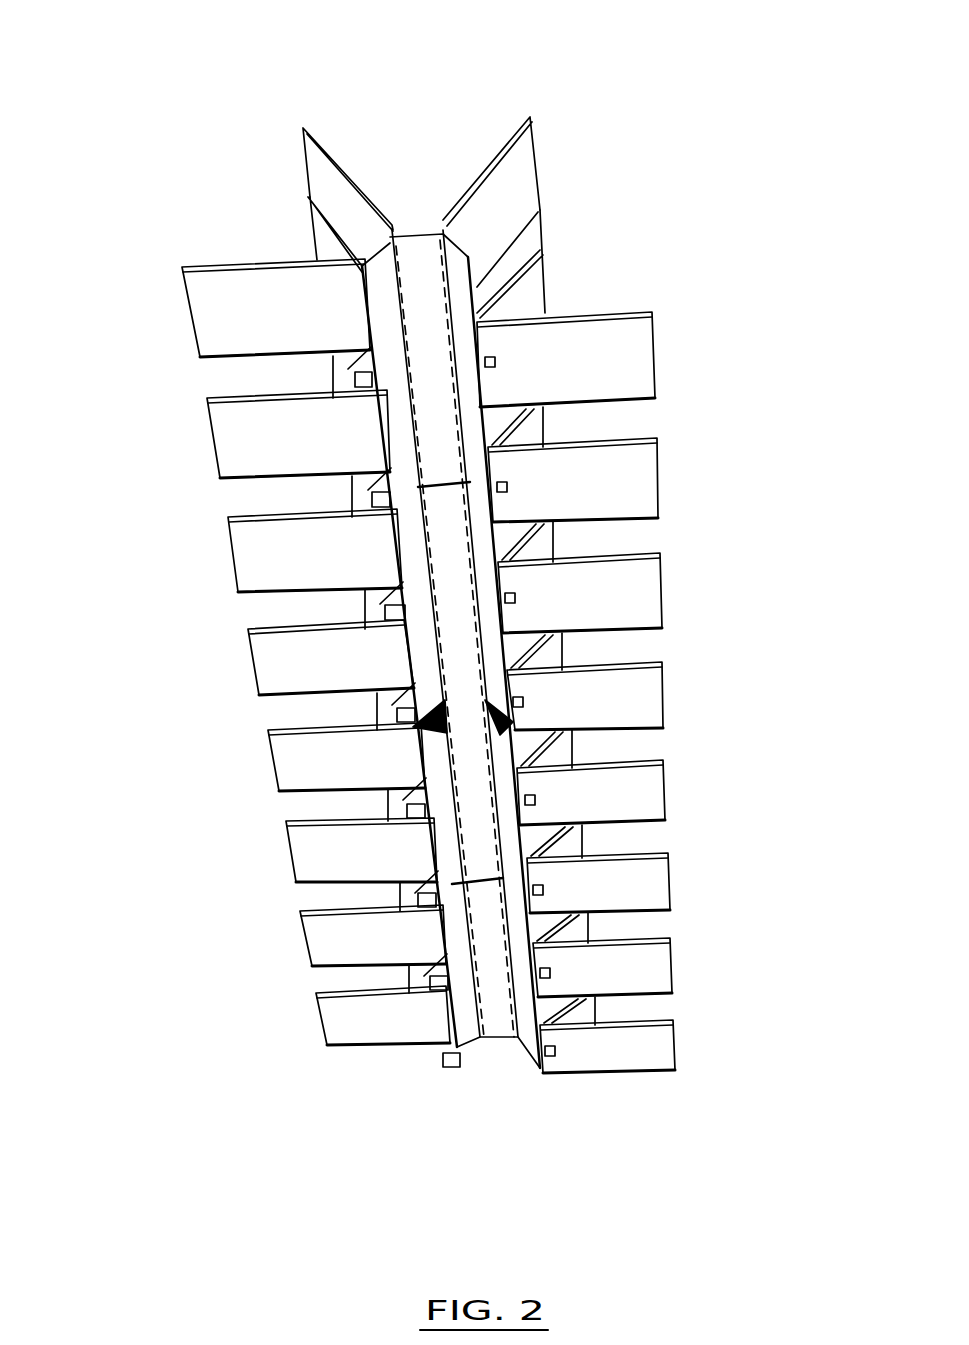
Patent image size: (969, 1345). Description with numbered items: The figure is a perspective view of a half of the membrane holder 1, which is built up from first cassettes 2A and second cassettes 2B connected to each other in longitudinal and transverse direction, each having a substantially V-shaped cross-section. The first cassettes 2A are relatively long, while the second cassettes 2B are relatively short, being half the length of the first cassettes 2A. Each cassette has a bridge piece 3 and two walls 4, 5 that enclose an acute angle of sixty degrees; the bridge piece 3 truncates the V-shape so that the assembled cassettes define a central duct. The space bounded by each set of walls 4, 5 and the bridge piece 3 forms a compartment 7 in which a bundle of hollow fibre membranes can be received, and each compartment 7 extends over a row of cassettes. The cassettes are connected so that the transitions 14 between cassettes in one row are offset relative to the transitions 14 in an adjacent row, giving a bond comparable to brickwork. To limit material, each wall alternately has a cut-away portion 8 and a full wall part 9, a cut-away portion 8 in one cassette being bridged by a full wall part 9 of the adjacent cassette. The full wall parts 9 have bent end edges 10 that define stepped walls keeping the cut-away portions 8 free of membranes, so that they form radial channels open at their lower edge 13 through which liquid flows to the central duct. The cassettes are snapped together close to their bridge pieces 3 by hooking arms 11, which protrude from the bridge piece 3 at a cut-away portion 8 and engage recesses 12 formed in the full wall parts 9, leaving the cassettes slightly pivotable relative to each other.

The membrane holder 1 is at (708, 134).
The first cassette 2A is at (485, 656).
The second cassette 2B is at (440, 265).
The bridge piece 3 is at (447, 450).
The wall 4 is at (342, 128).
The wall 5 is at (275, 215).
The compartment 7 is at (433, 148).
The cut-away portion 8 is at (260, 372).
The full wall part 9 is at (212, 425).
The bent end edge 10 is at (347, 1047).
The hooking arm 11 is at (360, 390).
The recess 12 is at (495, 363).
The lower edge 13 is at (355, 380).
The transition 14 is at (433, 497).